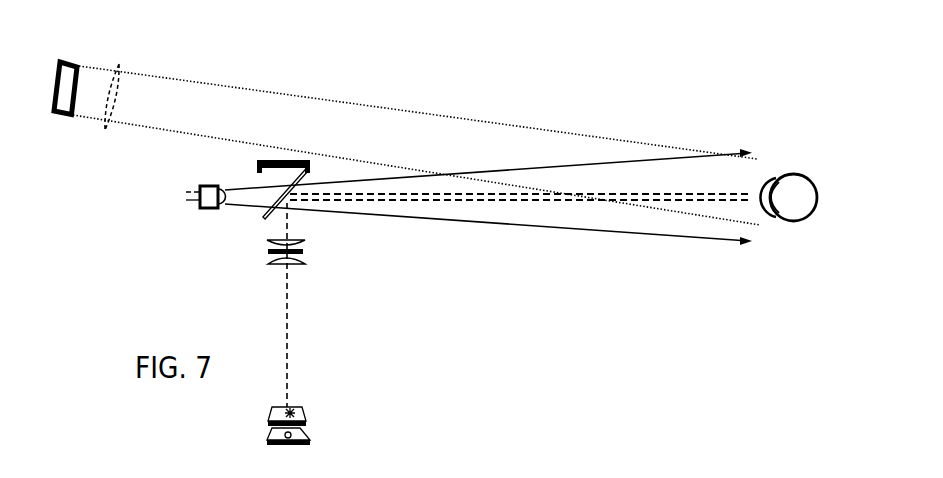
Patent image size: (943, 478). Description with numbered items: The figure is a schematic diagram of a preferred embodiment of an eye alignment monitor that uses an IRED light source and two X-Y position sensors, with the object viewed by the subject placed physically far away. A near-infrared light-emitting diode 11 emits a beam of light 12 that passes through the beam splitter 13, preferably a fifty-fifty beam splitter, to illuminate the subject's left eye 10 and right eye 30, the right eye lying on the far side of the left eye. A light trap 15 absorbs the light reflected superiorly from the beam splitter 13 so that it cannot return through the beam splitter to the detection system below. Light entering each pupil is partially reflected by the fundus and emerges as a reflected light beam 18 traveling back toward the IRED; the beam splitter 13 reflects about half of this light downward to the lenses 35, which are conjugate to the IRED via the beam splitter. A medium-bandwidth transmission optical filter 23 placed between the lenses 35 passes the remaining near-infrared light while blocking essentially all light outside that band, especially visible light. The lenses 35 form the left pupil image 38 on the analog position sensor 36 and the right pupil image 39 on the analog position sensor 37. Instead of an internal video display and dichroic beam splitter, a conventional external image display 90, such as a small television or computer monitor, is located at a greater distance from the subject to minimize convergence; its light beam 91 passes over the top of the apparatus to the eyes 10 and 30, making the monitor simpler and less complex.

The left eye 10 is at (800, 227).
The near-infrared light-emitting diode 11 is at (213, 213).
The beam of light 12 is at (248, 203).
The beam splitter 13 is at (308, 177).
The light trap 15 is at (253, 165).
The reflected light beam 18 is at (668, 196).
The medium-bandwidth transmission optical filter 23 is at (308, 255).
The right eye 30 is at (772, 220).
The lenses 35 is at (270, 245).
The position sensor 36 is at (270, 412).
The position sensor 37 is at (268, 436).
The left pupil image 38 is at (292, 413).
The right pupil image 39 is at (291, 434).
The conventional external image display 90 is at (62, 121).
The light beam 91 is at (171, 123).